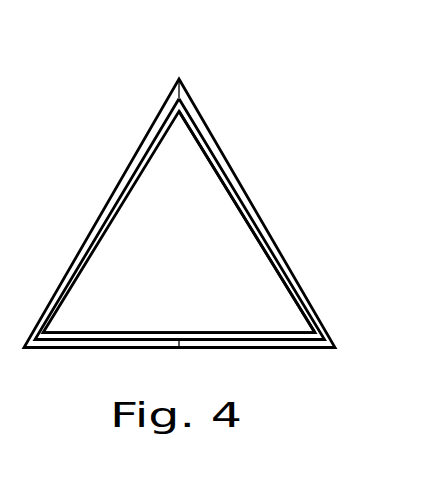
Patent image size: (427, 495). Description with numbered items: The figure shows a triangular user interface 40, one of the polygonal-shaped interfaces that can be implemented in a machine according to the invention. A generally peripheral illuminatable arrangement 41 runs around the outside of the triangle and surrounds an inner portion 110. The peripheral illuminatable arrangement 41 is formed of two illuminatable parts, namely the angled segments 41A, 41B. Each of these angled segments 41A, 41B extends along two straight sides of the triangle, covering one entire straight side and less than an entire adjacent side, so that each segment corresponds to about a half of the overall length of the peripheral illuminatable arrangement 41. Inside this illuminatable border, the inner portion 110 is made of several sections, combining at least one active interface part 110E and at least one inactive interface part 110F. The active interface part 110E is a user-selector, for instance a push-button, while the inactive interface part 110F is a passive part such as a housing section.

The interface 40 is at (90, 125).
The peripheral illuminatable arrangement 41 is at (196, 110).
The angled segment 41A is at (258, 228).
The angled segment 41B is at (108, 215).
The inner portion 110 is at (240, 227).
The active interface part 110E is at (240, 290).
The inactive interface part 110F is at (288, 293).